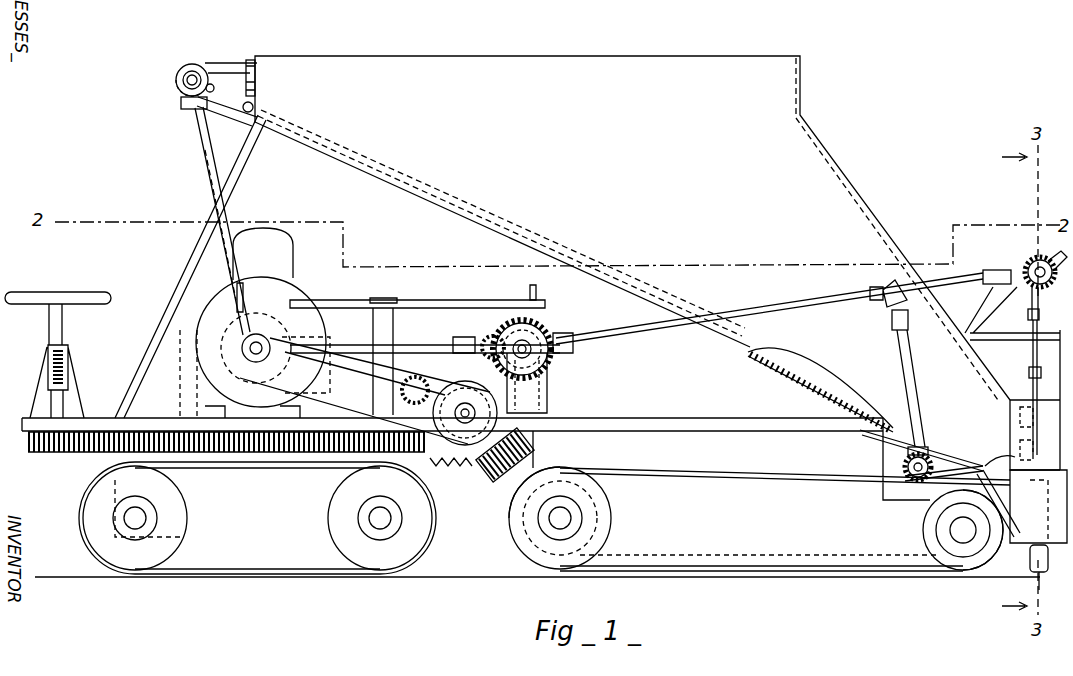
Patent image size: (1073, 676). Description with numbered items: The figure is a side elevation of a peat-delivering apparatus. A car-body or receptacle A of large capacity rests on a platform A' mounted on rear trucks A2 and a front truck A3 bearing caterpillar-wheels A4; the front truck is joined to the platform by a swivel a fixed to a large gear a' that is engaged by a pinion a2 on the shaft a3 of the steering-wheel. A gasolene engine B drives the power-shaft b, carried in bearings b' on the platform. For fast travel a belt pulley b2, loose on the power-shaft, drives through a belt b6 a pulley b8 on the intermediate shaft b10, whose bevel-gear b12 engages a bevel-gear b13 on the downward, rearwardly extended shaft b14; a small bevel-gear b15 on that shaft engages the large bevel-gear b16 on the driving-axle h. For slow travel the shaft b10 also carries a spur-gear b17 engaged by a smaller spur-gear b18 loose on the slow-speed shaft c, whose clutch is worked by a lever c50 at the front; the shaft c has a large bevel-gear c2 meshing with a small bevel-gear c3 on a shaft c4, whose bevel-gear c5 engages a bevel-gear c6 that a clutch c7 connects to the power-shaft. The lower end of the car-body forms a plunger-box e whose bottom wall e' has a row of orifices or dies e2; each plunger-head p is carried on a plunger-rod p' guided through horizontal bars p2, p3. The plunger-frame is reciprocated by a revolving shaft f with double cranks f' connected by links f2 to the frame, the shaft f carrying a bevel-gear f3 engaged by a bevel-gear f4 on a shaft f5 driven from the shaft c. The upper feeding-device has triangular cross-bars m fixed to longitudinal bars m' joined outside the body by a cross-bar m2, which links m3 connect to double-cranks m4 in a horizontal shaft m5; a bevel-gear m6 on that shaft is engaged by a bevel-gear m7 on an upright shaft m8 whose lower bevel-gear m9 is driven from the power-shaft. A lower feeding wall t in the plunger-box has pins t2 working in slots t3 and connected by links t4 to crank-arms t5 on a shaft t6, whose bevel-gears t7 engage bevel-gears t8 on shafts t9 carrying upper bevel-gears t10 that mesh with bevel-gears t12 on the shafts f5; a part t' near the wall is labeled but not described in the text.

The car-body or receptacle A is at (628, 228).
The platform A' is at (516, 459).
The rear trucks A2 is at (537, 522).
The front truck A3 is at (257, 518).
The caterpillar-wheels A4 is at (100, 544).
The swivel a is at (230, 476).
The large gear a' is at (80, 474).
The pinion a2 is at (40, 452).
The shaft of steering-wheel a3 is at (64, 330).
The gasolene engine B is at (300, 345).
The power-shaft b is at (321, 391).
The bearings b' is at (197, 391).
The belt pulley b2 is at (243, 350).
The belt b6 is at (405, 318).
The pulley b8 is at (452, 412).
The horizontal shaft b10 is at (460, 400).
The bevel-gear b12 is at (520, 406).
The bevel-gear b13 is at (468, 472).
The shaft b14 is at (535, 456).
The small bevel-gear b15 is at (562, 470).
The large bevel-gear b16 is at (602, 524).
The spur-gear b17 is at (437, 468).
The spur-gear b18 is at (516, 318).
The slow speed shaft c is at (536, 330).
The large bevel-gear c2 is at (530, 348).
The small bevel-gear c3 is at (482, 338).
The shaft c4 is at (412, 345).
The bevel-gear c5 is at (280, 325).
The bevel-gear c6 is at (237, 409).
The clutch c7 is at (280, 320).
The lever c50 is at (381, 300).
The revolving shaft f is at (1033, 265).
The double cranks f' is at (1030, 303).
The links f2 is at (1030, 318).
The bevel-gear f3 is at (1056, 256).
The bevel-gear f4 is at (1015, 278).
The shaft f5 is at (797, 313).
The driving-axle h is at (560, 520).
The cross-bars m is at (803, 394).
The longitudinal bars m' is at (802, 390).
The cross-bar m2 is at (258, 108).
The links m3 is at (226, 98).
The double-cranks m4 is at (202, 62).
The horizontal shaft m5 is at (178, 72).
The bevel-gear m6 is at (180, 86).
The bevel-gear m7 is at (182, 104).
The upright shaft m8 is at (207, 160).
The bevel-gear m9 is at (243, 335).
The plunger-head p is at (1043, 395).
The plunger-rod p' is at (1020, 364).
The horizontal bar p2 is at (1020, 432).
The horizontal bar p3 is at (1030, 376).
The wall t is at (998, 503).
The pivot t' is at (1020, 525).
The pins t2 is at (959, 481).
The slots t3 is at (1010, 449).
The links t4 is at (981, 455).
The crank-arms t5 is at (905, 478).
The horizontal shaft t6 is at (915, 485).
The bevel-gears t7 is at (918, 490).
The bevel-gears t8 is at (905, 468).
The shafts t9 is at (913, 386).
The bevel-gears t10 is at (906, 310).
The bevel-gears t12 is at (878, 294).
The plunger-box e is at (1038, 506).
The bottom wall e' is at (1051, 568).
The orifices e2 is at (1031, 547).